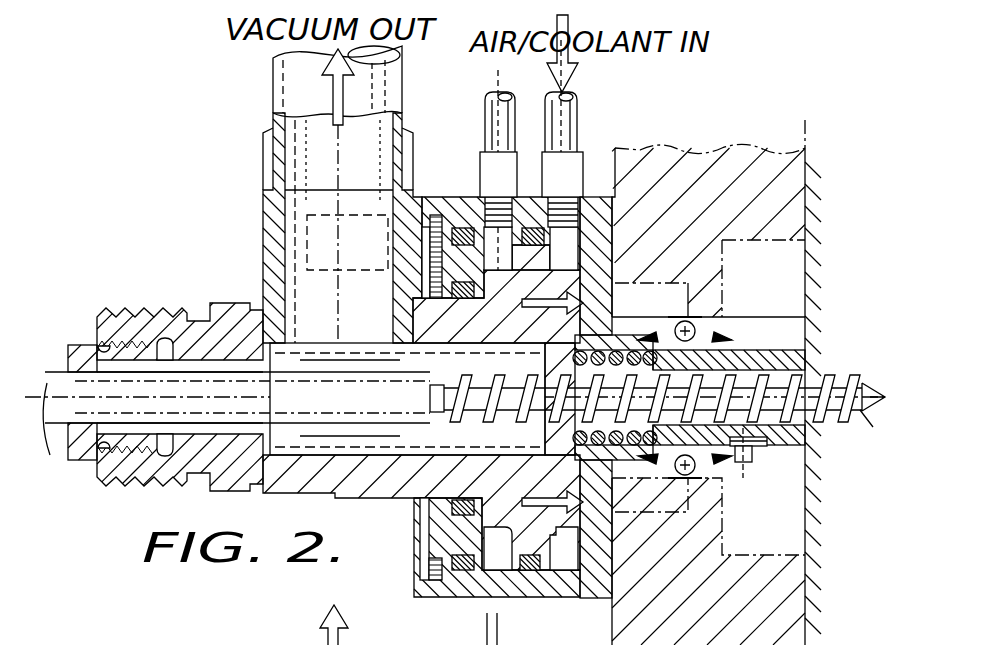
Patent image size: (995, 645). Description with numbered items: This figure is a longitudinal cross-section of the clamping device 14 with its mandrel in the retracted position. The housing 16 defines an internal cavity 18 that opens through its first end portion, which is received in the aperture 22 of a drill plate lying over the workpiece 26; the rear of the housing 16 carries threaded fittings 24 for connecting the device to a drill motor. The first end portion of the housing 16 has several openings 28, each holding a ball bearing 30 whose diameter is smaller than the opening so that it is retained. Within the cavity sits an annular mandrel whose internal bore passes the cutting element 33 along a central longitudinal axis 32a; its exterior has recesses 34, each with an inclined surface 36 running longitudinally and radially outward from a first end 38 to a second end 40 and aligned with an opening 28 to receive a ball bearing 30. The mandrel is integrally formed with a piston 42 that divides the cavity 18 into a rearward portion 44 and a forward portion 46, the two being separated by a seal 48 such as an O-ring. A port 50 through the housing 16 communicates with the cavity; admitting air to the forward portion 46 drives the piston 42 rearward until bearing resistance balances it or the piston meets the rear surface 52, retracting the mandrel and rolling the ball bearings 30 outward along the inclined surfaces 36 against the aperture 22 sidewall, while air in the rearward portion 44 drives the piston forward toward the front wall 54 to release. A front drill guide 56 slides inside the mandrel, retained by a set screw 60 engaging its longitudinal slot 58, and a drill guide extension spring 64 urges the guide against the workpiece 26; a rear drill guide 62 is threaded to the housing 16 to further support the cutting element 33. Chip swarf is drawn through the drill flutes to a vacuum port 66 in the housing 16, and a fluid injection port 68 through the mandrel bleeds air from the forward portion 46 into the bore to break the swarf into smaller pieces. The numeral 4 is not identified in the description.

The pin 4 is at (647, 282).
The clamping device 14 is at (387, 522).
The housing 16 is at (570, 584).
The internal cavity 18 is at (578, 278).
The aperture 22 is at (765, 480).
The threaded fittings 24 is at (143, 336).
The workpiece 26 is at (808, 545).
The openings 28 is at (697, 331).
The ball bearings 30 is at (718, 317).
The central longitudinal axis 32a is at (46, 430).
The cutting element 33 is at (882, 392).
The recesses 34 is at (700, 470).
The inclined surface 36 is at (800, 375).
The first end 38 is at (670, 290).
The second end 40 is at (702, 356).
The piston 42 is at (576, 212).
The rearward portion 44 is at (492, 240).
The forward portion 46 is at (578, 560).
The seal 48 is at (467, 231).
The port 50 is at (505, 170).
The rear surface 52 is at (407, 399).
The front wall 54 is at (612, 223).
The front drill guide 56 is at (806, 356).
The longitudinal slot 58 is at (790, 440).
The set screw 60 is at (768, 452).
The rear drill guide 62 is at (80, 345).
The drill guide extension spring 64 is at (580, 456).
The vacuum port 66 is at (345, 245).
The fluid injection port 68 is at (580, 343).